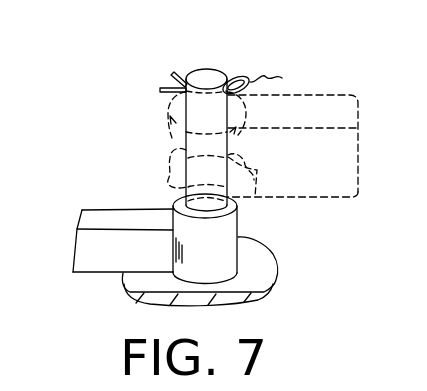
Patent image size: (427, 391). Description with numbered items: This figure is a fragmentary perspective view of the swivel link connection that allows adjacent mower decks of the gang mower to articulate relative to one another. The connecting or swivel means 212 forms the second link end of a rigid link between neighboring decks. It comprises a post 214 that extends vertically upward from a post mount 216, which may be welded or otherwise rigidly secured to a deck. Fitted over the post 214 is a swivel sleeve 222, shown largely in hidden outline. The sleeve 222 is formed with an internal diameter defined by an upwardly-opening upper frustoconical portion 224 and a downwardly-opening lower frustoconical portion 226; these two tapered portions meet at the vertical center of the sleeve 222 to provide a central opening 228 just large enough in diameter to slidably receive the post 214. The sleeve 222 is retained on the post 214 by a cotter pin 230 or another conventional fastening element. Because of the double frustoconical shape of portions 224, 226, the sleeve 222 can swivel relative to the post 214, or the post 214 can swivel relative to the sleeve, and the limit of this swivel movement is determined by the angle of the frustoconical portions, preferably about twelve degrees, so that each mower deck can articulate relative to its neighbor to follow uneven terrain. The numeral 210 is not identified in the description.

The housing frame (hidden) 210 is at (337, 95).
The swivel means 212 is at (243, 66).
The post 214 is at (218, 75).
The post mount 216 is at (95, 260).
The swivel sleeve 222 is at (172, 153).
The upper frustoconical portion 224 is at (267, 131).
The lower frustoconical portion 226 is at (252, 196).
The central opening 228 is at (172, 183).
The cotter pin 230 is at (290, 77).